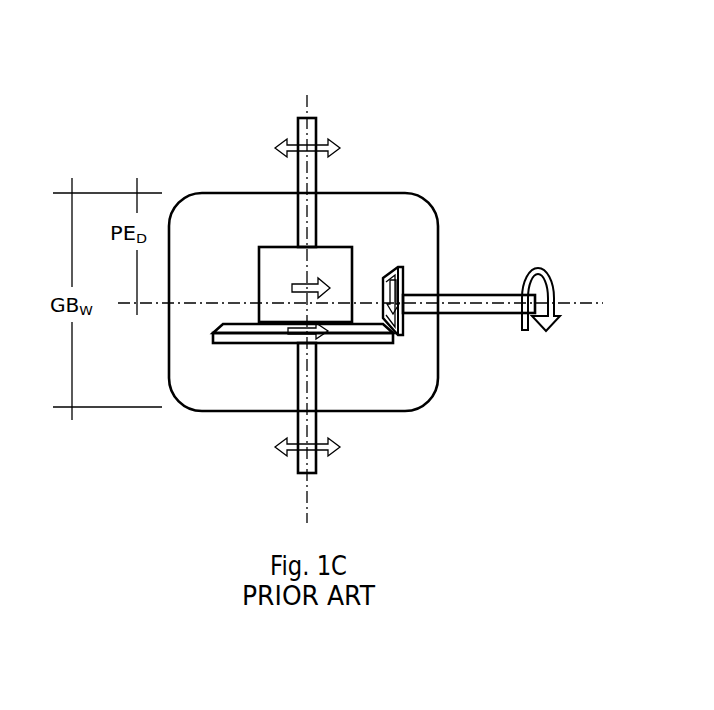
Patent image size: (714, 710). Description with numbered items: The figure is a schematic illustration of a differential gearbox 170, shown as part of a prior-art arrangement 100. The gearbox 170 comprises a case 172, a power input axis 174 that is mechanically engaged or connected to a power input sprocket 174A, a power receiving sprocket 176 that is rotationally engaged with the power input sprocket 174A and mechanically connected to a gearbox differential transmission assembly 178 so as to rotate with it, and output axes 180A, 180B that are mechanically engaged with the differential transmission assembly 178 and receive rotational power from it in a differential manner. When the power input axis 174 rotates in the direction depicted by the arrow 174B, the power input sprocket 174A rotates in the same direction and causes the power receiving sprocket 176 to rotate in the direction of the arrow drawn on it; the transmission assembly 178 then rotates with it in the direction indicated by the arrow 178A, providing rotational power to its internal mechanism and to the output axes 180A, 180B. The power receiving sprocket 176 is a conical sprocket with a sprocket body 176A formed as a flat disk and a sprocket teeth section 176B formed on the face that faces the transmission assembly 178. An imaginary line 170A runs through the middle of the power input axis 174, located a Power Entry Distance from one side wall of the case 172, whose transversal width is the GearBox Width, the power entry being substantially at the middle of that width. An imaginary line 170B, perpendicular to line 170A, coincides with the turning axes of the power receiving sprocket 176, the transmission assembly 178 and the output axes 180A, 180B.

The gearbox system 100 is at (338, 313).
The differential gearbox 170 is at (540, 496).
The imaginary line 170A is at (565, 303).
The imaginary line 170B is at (310, 492).
The case 172 is at (432, 205).
The power input axis 174 is at (465, 293).
The power input sprocket 174A is at (405, 270).
The arrow 174B is at (543, 272).
The power receiving sprocket 176 is at (368, 363).
The sprocket body 176A is at (337, 343).
The sprocket teeth section 176B is at (256, 330).
The gearbox differential transmission assembly 178 is at (345, 247).
The slider motion direction 178A is at (322, 280).
The output axis 180A is at (295, 130).
The output axis 180B is at (293, 464).